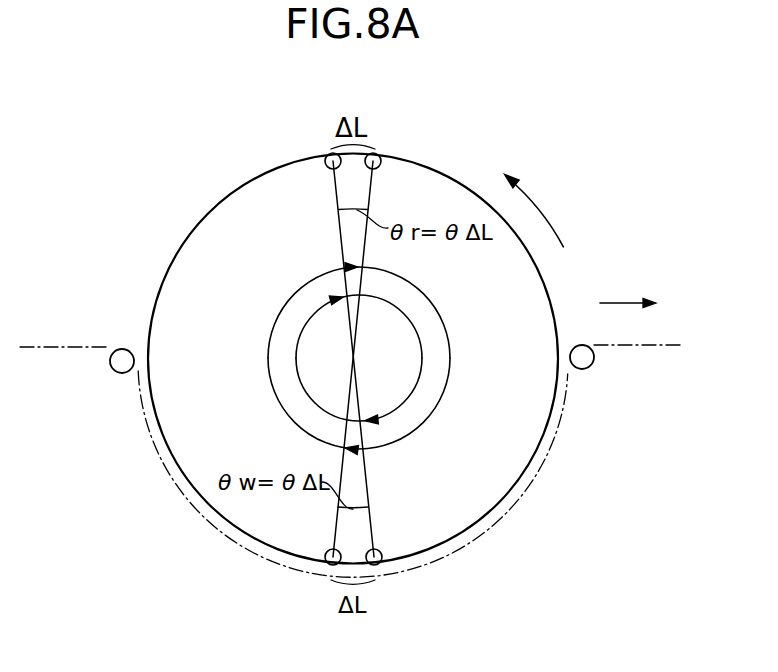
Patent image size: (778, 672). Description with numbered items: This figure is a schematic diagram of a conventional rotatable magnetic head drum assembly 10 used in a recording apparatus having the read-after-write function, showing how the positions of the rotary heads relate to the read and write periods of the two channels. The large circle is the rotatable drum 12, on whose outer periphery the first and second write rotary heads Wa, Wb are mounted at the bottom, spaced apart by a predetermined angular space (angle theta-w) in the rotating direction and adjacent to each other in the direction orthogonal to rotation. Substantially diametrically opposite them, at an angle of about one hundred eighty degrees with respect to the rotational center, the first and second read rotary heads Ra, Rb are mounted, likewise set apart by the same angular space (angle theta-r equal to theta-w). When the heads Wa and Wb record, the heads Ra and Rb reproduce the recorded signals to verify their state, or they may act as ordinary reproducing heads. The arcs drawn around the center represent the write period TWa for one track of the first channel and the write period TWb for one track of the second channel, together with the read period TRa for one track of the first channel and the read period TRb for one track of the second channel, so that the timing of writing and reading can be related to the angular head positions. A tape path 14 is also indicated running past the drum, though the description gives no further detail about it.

The rotatable magnetic head drum assembly 10 is at (622, 119).
The rotatable drum 12 is at (202, 215).
The transfer belt / recording medium path 14 is at (677, 345).
The third rotary head Ra is at (327, 157).
The fourth rotary head Rb is at (388, 155).
The first rotary head Wa is at (388, 563).
The second rotary head Wb is at (322, 562).
The write period for one track of the first channel TWa is at (297, 375).
The write period for one track of the second channel TWb is at (297, 298).
The read period for one track of the first channel TRa is at (400, 410).
The read period for one track of the second channel TRb is at (448, 335).